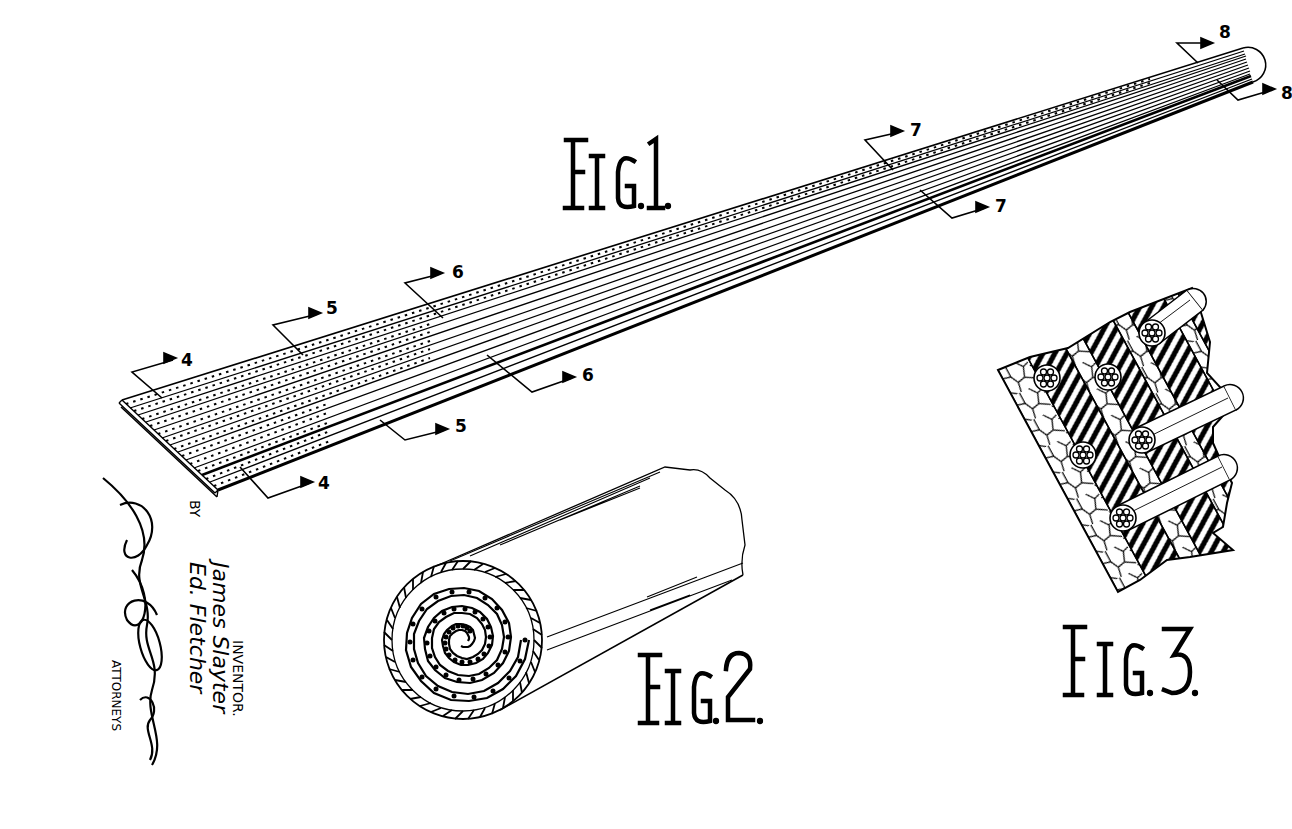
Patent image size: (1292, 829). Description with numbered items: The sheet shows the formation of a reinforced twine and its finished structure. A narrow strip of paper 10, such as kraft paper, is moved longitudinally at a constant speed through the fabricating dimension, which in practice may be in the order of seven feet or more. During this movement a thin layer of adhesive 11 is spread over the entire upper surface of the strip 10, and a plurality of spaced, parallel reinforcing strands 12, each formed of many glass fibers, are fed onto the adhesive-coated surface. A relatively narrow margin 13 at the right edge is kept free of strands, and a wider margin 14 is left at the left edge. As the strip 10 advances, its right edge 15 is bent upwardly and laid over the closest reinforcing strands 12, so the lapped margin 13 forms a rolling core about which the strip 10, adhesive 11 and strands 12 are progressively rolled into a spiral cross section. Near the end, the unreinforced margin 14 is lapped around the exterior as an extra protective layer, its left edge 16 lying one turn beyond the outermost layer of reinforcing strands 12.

In FIG. 1, the strip of paper 10 is at (195, 473).
In FIG. 2, the strip of paper 10 is at (547, 663).
In FIG. 3, the strip of paper 10 is at (1062, 350).
In FIG. 1, the layer of adhesive 11 is at (233, 370).
In FIG. 2, the layer of adhesive 11 is at (393, 660).
In FIG. 3, the layer of adhesive 11 is at (1087, 333).
In FIG. 1, the reinforcing strands 12 is at (273, 360).
In FIG. 2, the reinforcing strands 12 is at (397, 620).
In FIG. 3, the reinforcing strands 12 is at (1185, 325).
In FIG. 1, the margin 13 is at (212, 494).
In FIG. 1, the margin 14 is at (118, 418).
In FIG. 2, the margin 14 is at (420, 697).
In FIG. 1, the right edge 15 is at (248, 477).
In FIG. 2, the right edge 15 is at (517, 693).
In FIG. 1, the left edge 16 is at (348, 330).
In FIG. 2, the left edge 16 is at (427, 572).